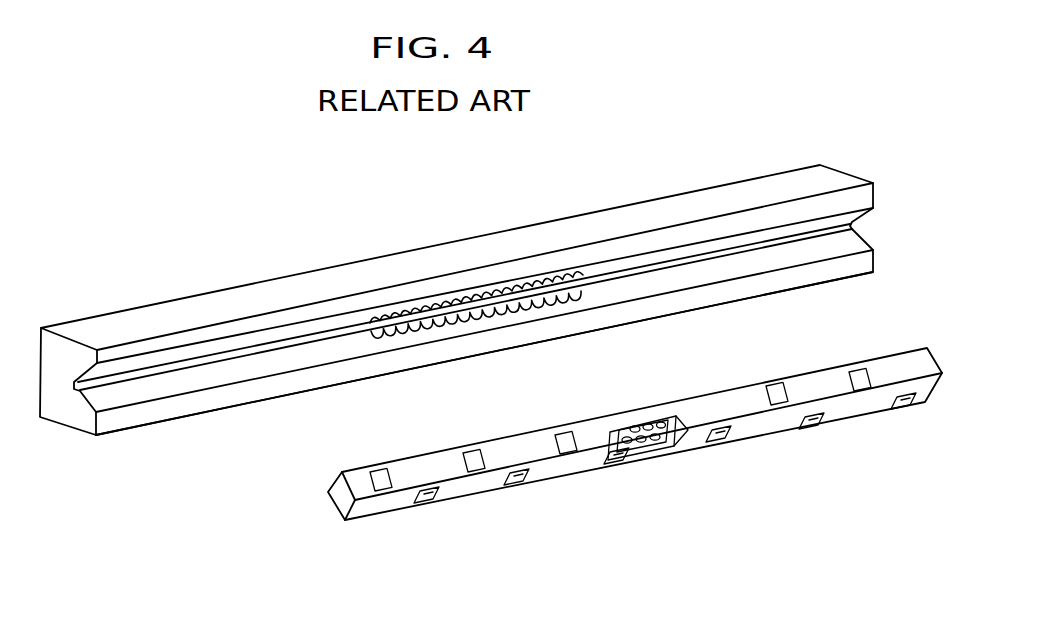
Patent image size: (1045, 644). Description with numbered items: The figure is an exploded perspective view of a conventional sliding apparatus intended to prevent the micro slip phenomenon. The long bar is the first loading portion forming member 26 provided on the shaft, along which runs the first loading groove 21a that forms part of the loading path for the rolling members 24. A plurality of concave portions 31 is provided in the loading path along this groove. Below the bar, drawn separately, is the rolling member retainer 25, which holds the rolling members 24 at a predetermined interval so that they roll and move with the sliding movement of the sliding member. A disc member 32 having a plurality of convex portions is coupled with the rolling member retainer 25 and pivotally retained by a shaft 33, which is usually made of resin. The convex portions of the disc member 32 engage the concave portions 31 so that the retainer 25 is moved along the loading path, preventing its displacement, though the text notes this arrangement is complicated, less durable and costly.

The first loading portion forming member 26 is at (456, 330).
The first loading groove 21a is at (137, 392).
The concave portions 31 is at (371, 333).
The rolling member retainer 25 is at (623, 459).
The rolling members 24 is at (388, 482).
The disc member 32 is at (642, 433).
The shaft 33 is at (646, 426).